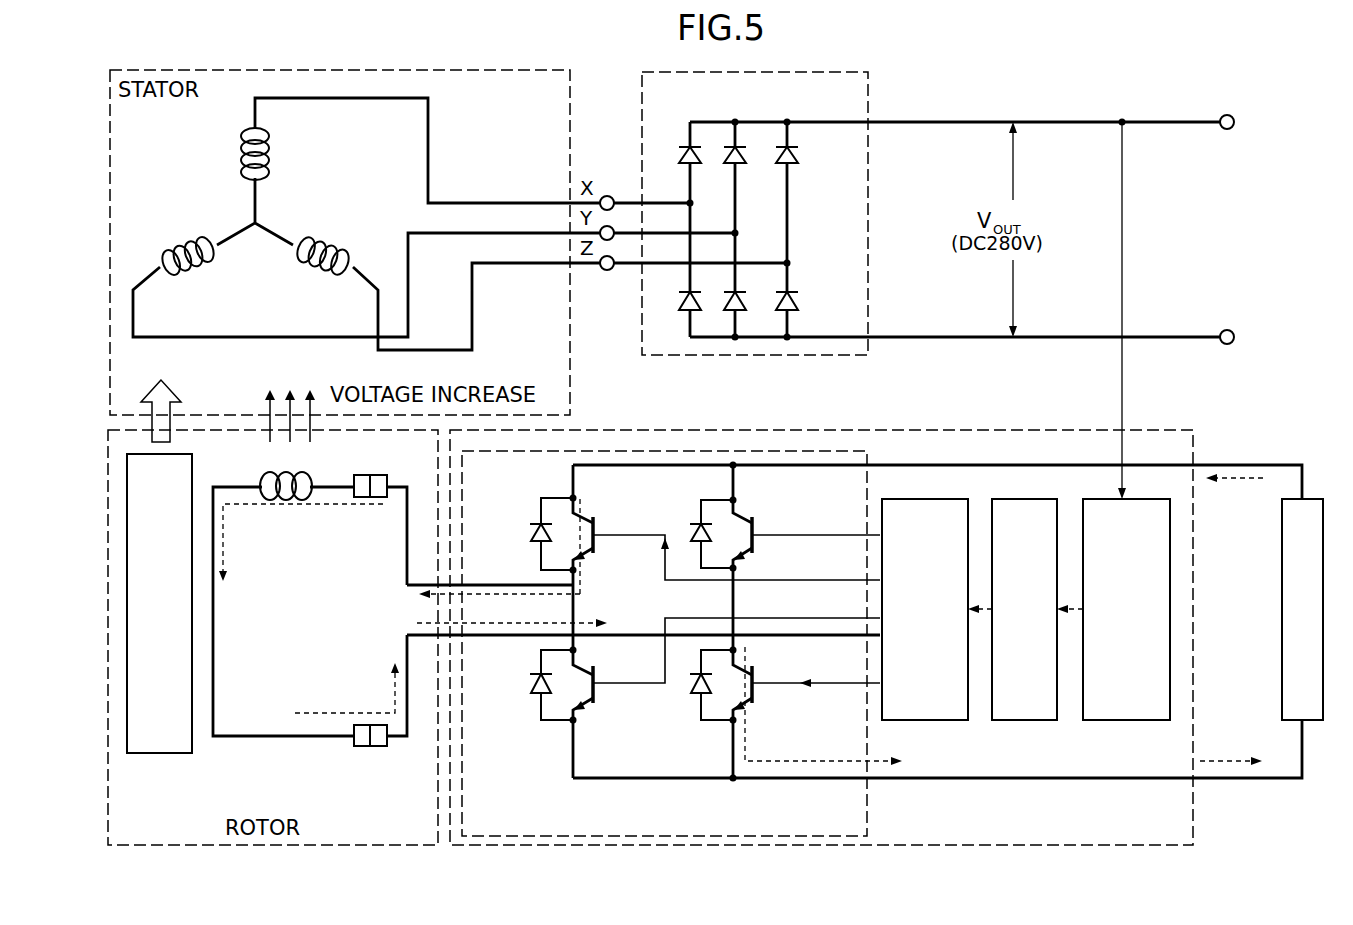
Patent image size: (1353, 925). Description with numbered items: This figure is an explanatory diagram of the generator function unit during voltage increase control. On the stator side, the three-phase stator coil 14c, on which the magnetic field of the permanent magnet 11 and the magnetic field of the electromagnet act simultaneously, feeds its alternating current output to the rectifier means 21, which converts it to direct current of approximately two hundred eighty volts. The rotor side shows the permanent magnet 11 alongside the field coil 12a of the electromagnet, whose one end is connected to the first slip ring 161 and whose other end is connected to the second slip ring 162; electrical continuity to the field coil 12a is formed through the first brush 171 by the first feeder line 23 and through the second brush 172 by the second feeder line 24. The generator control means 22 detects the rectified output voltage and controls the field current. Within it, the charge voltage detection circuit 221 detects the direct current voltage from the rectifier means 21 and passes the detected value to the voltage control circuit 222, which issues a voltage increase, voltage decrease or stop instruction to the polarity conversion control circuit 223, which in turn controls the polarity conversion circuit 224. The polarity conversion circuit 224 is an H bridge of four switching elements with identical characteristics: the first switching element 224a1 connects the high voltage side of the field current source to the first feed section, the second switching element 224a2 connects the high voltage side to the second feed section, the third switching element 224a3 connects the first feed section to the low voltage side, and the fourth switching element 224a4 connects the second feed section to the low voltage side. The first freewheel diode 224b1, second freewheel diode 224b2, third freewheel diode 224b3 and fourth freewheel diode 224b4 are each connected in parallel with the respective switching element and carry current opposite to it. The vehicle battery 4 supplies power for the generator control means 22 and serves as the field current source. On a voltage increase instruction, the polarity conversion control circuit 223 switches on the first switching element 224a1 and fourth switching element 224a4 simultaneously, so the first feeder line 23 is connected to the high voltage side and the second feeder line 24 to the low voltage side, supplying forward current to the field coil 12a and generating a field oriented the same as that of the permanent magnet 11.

The stator coil 14c is at (270, 153).
The rectifier means 21 is at (869, 84).
The generator control means 22 is at (1195, 808).
The charge voltage detection circuit 221 is at (1160, 498).
The voltage control circuit 222 is at (1018, 498).
The polarity conversion control circuit 223 is at (922, 498).
The polarity conversion circuit 224 is at (882, 612).
The first switching element 224a1 is at (583, 552).
The second switching element 224a2 is at (754, 521).
The third switching element 224a3 is at (597, 695).
The fourth switching element 224a4 is at (754, 668).
The first freewheel diode 224b1 is at (530, 527).
The second freewheel diode 224b2 is at (688, 528).
The third freewheel diode 224b3 is at (532, 698).
The fourth freewheel diode 224b4 is at (690, 700).
The vehicle battery 4 is at (1312, 498).
The permanent magnet 11 is at (157, 755).
The field coil 12a is at (286, 500).
The first feeder line 23 is at (397, 486).
The second feeder line 24 is at (395, 747).
The first slip ring 161 is at (360, 497).
The second slip ring 162 is at (360, 725).
The first brush 171 is at (384, 497).
The second brush 172 is at (380, 725).